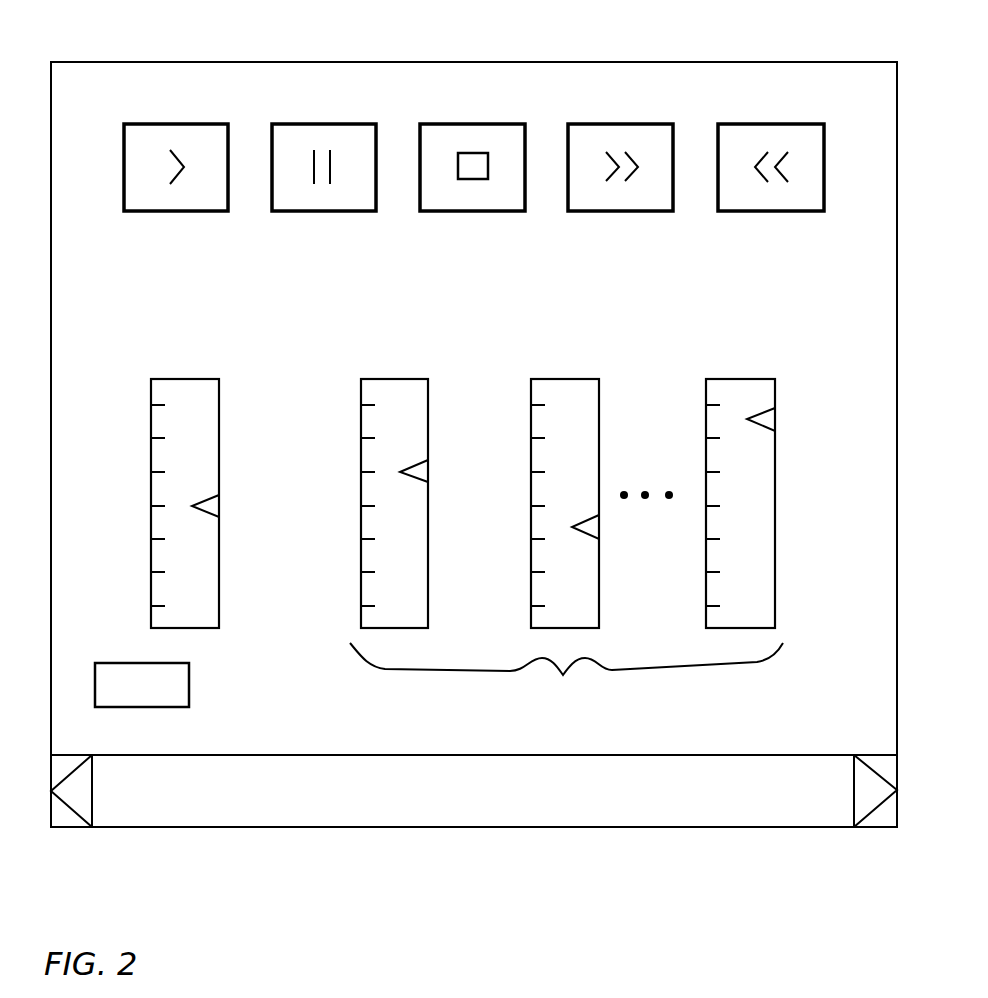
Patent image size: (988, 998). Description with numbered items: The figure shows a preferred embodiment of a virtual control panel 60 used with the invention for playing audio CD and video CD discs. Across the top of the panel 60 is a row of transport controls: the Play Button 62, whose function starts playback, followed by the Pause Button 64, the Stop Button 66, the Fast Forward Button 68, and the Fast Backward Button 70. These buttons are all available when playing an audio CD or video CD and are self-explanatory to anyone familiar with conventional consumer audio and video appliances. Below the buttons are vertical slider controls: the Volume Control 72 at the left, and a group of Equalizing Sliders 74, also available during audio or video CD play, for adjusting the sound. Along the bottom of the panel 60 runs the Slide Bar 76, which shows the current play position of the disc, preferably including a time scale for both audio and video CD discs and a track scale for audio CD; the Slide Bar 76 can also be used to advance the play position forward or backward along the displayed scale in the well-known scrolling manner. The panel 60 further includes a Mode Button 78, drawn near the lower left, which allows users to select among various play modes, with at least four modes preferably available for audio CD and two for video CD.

The display screen / user interface window 60 is at (114, 46).
The Play Button 62 is at (176, 190).
The Pause Button 64 is at (324, 190).
The Stop Button 66 is at (472, 190).
The Fast Forward Button 68 is at (620, 190).
The Fast Backward Button 70 is at (771, 190).
The Volume Control 72 is at (163, 503).
The Equalizing Sliders 74 is at (566, 541).
The Slide Bar 76 is at (457, 791).
The Mode Button 78 is at (164, 685).